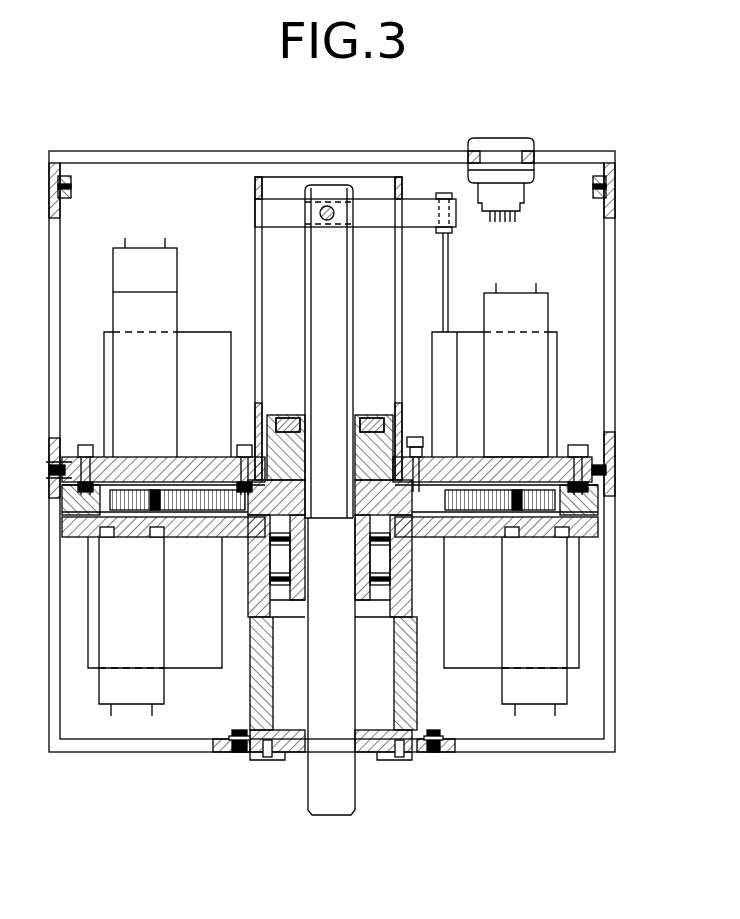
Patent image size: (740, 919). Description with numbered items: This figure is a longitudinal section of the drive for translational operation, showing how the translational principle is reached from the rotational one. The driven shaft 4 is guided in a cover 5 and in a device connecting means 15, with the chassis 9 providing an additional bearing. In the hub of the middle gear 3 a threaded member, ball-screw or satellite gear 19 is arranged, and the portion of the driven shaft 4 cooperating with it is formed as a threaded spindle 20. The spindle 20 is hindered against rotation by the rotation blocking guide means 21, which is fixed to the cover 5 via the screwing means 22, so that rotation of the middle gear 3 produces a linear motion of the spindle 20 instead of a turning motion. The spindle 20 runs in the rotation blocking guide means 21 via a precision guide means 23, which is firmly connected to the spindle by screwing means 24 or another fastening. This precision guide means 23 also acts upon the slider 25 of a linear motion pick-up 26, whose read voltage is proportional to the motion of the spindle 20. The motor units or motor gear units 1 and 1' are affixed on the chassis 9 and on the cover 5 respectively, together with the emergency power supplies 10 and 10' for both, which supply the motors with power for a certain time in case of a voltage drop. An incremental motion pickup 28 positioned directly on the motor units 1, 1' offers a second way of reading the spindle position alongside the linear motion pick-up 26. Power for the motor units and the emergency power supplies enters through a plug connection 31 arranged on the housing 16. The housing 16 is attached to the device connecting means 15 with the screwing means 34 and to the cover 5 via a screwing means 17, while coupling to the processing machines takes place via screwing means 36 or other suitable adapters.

The motor unit 1 is at (319, 631).
The motor unit 1' is at (348, 370).
The middle gear 3 is at (204, 512).
The driven shaft 4 is at (312, 801).
The cover 5 is at (136, 452).
The chassis 9 is at (442, 538).
The emergency power supply 10 is at (333, 620).
The emergency power supply 10' is at (173, 379).
The device connecting means 15 is at (266, 666).
The housing 16 is at (50, 315).
The screwing means 17 is at (608, 472).
The satellite gear 19 is at (305, 425).
The threaded spindle 20 is at (320, 311).
The rotation blocking guide means 21 is at (258, 270).
The screwing means 22 is at (415, 437).
The precision guide means 23 is at (255, 221).
The screwing means 24 is at (327, 207).
The slider 25 is at (445, 262).
The linear motion pick-up 26 is at (436, 337).
The incremental motion pickup 28 is at (116, 264).
The plug connection 31 is at (535, 150).
The screwing means 34 is at (238, 752).
The screwing means 36 is at (400, 756).